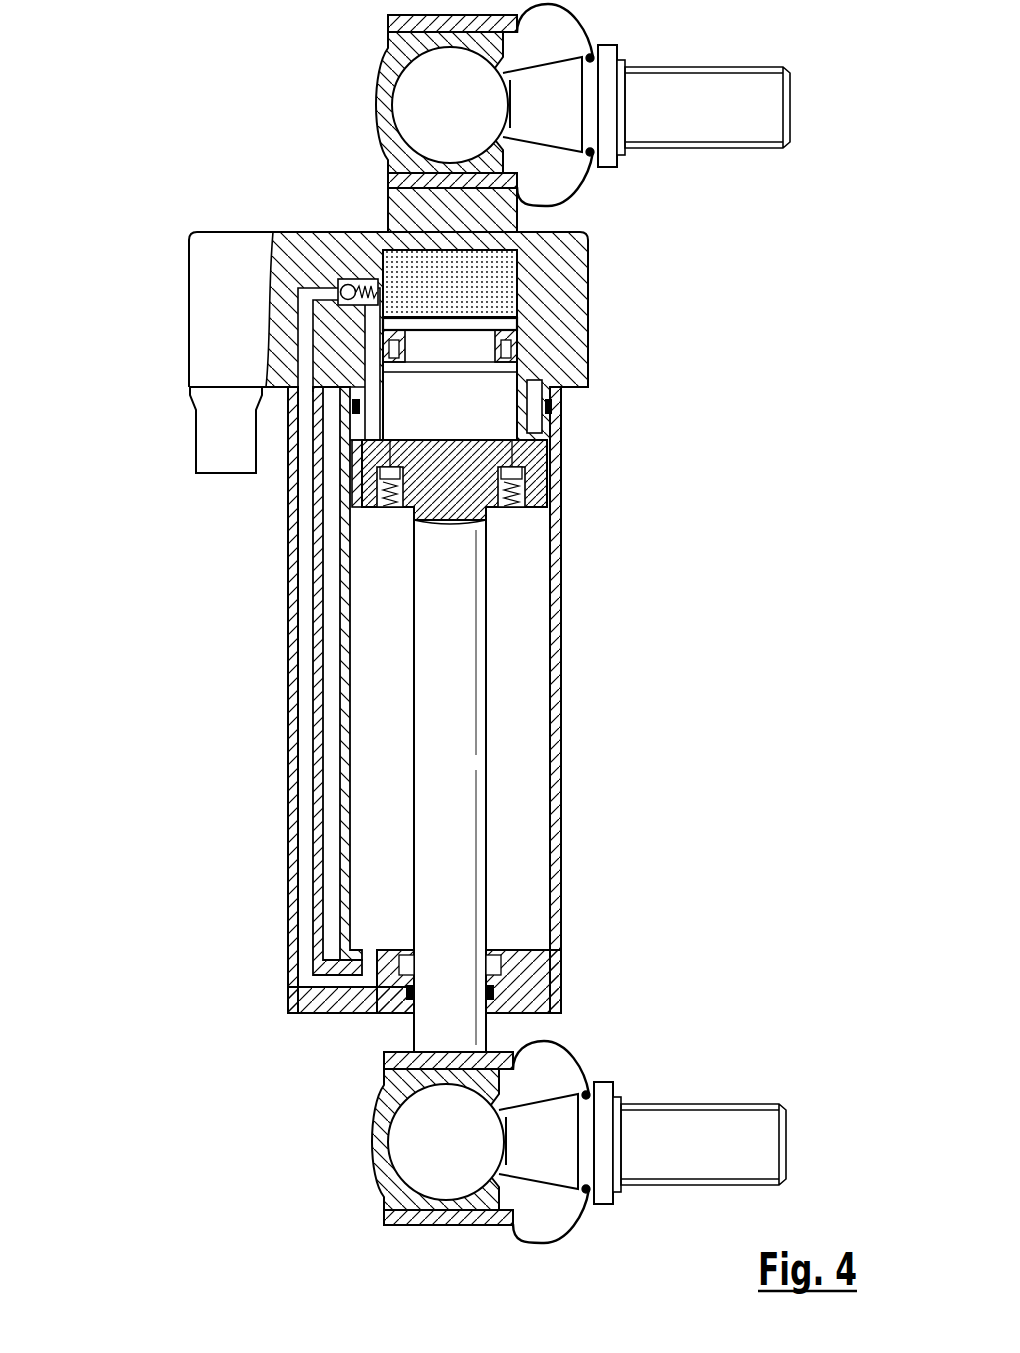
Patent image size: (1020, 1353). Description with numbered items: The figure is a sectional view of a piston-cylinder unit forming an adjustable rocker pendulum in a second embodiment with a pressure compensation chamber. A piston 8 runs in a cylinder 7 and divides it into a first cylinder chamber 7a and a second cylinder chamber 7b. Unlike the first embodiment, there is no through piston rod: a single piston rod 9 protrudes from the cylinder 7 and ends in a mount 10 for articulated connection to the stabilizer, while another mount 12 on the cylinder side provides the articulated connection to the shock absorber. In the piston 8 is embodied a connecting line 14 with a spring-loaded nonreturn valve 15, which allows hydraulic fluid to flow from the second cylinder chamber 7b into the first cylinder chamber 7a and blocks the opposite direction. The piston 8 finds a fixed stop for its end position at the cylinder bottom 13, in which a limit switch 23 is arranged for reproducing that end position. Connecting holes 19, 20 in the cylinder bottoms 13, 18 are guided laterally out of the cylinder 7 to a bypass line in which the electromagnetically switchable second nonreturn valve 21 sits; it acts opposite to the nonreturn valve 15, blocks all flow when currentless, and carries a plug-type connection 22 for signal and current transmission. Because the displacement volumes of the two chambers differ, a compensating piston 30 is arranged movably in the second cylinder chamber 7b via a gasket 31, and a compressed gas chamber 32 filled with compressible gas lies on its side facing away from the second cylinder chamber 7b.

The cylinder 7 is at (556, 750).
The first cylinder chamber 7a is at (515, 812).
The second cylinder chamber 7b is at (500, 422).
The piston 8 is at (436, 508).
The piston rod 9 is at (492, 700).
The mount 10 is at (345, 1128).
The mount 12 is at (345, 92).
The cylinder bottom 13 is at (375, 432).
The connecting line 14 is at (550, 458).
The nonreturn valve 15 is at (516, 520).
The cylinder bottom 18 is at (518, 995).
The connecting hole 19 is at (370, 992).
The connecting hole 20 is at (367, 377).
The electromagnetically switchable nonreturn valve 21 is at (345, 278).
The plug-type connection 22 is at (205, 460).
The limit switch 23 is at (548, 402).
The compensating piston 30 is at (476, 340).
The gasket 31 is at (520, 348).
The compressed gas chamber 32 is at (490, 270).